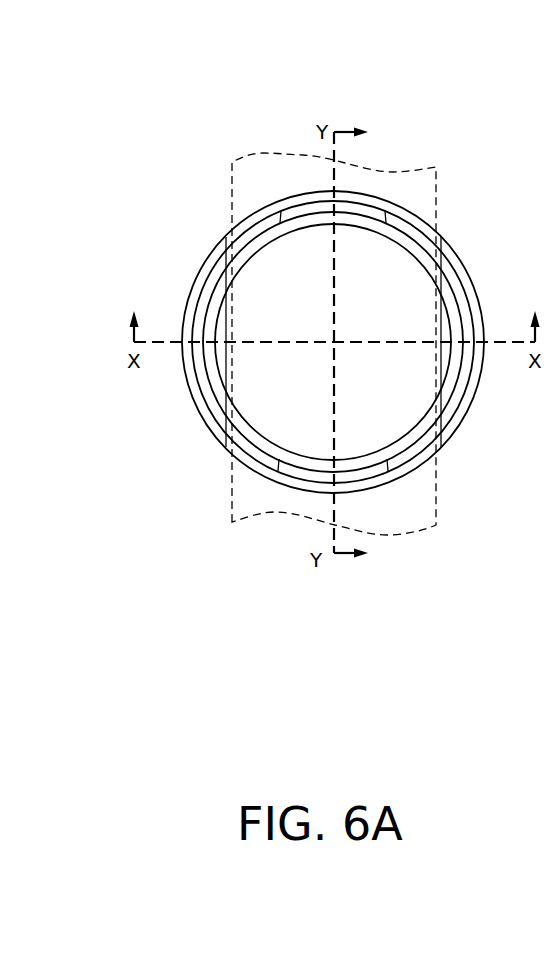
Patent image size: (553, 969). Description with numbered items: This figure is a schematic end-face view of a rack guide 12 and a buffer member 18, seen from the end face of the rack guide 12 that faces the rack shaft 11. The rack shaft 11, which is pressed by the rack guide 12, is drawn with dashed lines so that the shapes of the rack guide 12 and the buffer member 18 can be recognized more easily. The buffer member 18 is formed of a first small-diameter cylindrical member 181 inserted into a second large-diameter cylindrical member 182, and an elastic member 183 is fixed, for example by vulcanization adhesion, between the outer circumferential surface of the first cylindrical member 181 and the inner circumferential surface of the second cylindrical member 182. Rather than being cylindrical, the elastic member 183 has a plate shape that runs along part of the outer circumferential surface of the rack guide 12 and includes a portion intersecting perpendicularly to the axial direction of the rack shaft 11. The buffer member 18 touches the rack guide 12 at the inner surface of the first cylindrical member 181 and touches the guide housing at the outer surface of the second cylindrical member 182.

The rack shaft 11 is at (413, 167).
The rack guide 12 is at (265, 262).
The buffer member 18 is at (333, 434).
The first small-diameter cylindrical member 181 is at (252, 470).
The elastic member 183 is at (292, 475).
The second large-diameter cylindrical member 182 is at (309, 488).